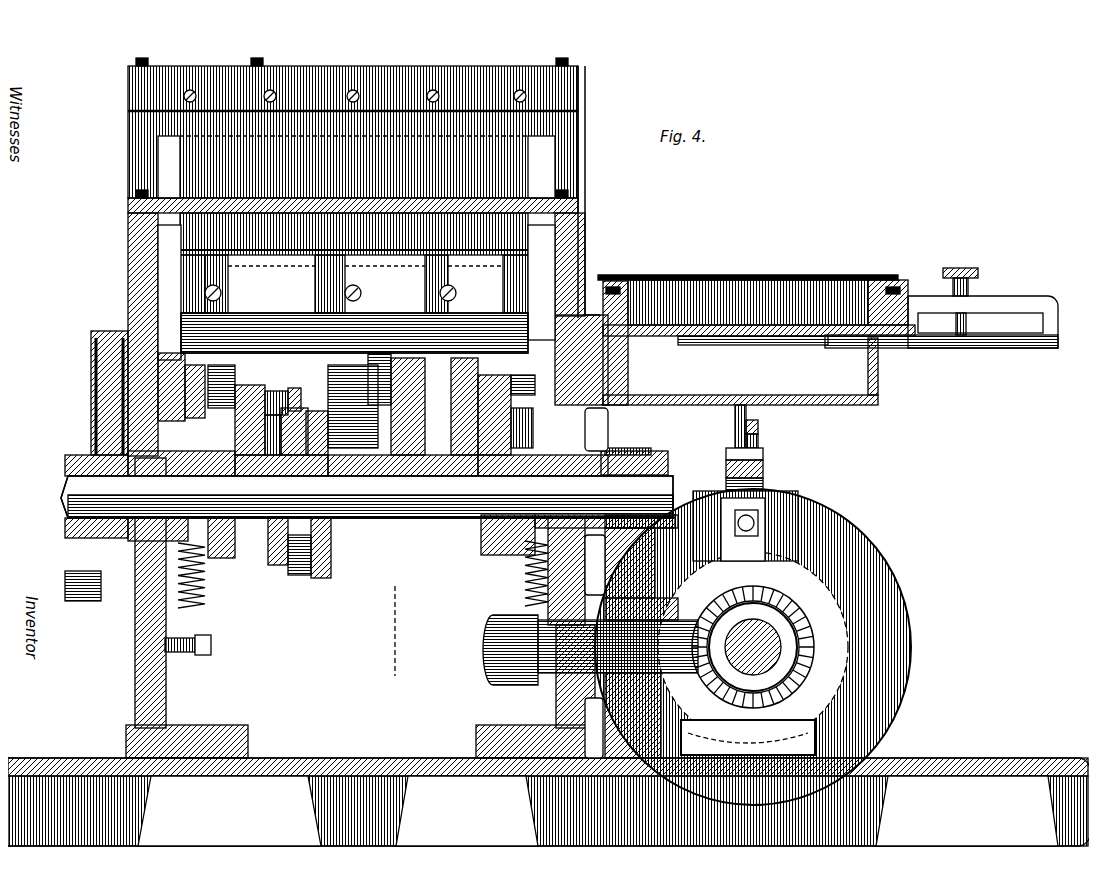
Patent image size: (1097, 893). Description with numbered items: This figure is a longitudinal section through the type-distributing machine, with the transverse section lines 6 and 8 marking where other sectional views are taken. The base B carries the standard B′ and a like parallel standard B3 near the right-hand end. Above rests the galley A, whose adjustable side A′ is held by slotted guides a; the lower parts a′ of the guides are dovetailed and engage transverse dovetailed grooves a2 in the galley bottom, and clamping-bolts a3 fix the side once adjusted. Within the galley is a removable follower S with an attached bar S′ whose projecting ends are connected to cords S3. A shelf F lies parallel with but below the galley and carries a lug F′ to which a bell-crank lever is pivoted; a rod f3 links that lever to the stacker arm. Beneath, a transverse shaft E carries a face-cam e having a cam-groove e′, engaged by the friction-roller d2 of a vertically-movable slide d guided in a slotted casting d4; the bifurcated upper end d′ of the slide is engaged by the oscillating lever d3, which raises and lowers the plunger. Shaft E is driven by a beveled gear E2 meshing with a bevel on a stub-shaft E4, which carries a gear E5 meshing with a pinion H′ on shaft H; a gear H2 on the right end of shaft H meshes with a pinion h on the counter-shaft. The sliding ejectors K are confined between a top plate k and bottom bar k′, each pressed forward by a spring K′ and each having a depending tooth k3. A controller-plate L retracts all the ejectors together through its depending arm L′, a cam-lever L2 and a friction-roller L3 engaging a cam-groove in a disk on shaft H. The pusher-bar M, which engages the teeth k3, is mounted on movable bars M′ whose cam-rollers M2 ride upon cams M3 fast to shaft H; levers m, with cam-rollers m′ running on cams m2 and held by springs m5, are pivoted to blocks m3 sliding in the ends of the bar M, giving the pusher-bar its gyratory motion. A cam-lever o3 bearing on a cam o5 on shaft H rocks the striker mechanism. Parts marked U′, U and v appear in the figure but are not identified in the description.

The spring K′ is at (444, 95).
The section line 8 is at (184, 75).
The section line 6 is at (395, 75).
The depending tooth k3 is at (415, 78).
The bottom bar k′ is at (326, 93).
The top plate k is at (530, 190).
The sliding ejector K is at (354, 263).
The pusher-bar M is at (392, 275).
The block m3 is at (361, 275).
The base B is at (548, 529).
The controller-plate L is at (354, 333).
The lever m is at (398, 329).
The cam-roller m′ is at (346, 386).
The cam-roller M2 is at (373, 403).
The depending arm L′ is at (342, 405).
The cam-lever L2 is at (293, 421).
The friction-roller L3 is at (379, 396).
The block U′ is at (419, 406).
The gear H2 is at (83, 388).
The movable bar M′ is at (368, 504).
The pinion h is at (70, 595).
The cam M3 is at (399, 554).
The cam-lever o3 is at (300, 569).
The cam o5 is at (323, 570).
The cam m2 is at (365, 575).
The spring m5 is at (363, 582).
The standard B3 is at (188, 664).
The block U is at (385, 615).
The center line v is at (395, 637).
The shaft H is at (636, 535).
The pinion H′ is at (638, 443).
The standard B′ is at (603, 429).
The shelf F is at (740, 384).
The follower S is at (748, 302).
The bar S′ is at (748, 268).
The galley A is at (790, 257).
The adjustable side A′ is at (868, 272).
The cord S3 is at (763, 275).
The slotted guide a is at (983, 312).
The lower part of guide a′ is at (941, 352).
The dovetailed groove a2 is at (786, 337).
The clamping-bolt a3 is at (960, 287).
The lug F′ is at (725, 410).
The rod f3 is at (762, 420).
The bifurcated upper end d′ is at (765, 437).
The oscillating lever d3 is at (757, 458).
The friction-roller d2 is at (715, 484).
The slide d is at (782, 486).
The face-cam e is at (898, 610).
The cam-groove e′ is at (836, 618).
The slotted casting d4 is at (790, 540).
The shaft E is at (737, 647).
The stub-shaft E4 is at (590, 686).
The beveled gear E2 is at (748, 737).
The gear E5 is at (640, 768).